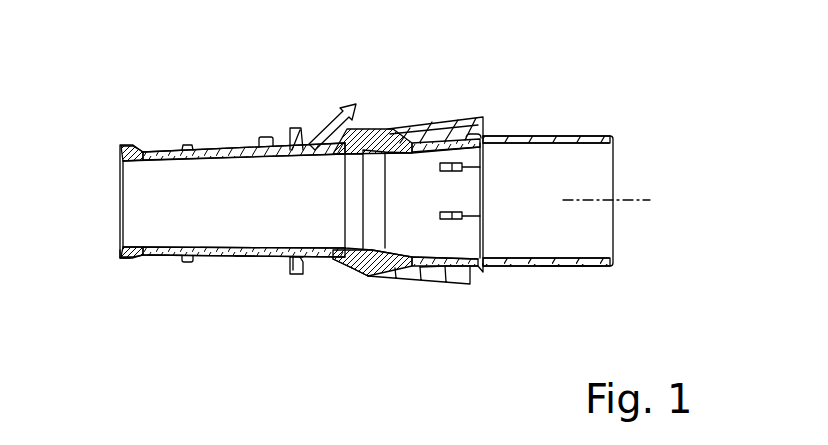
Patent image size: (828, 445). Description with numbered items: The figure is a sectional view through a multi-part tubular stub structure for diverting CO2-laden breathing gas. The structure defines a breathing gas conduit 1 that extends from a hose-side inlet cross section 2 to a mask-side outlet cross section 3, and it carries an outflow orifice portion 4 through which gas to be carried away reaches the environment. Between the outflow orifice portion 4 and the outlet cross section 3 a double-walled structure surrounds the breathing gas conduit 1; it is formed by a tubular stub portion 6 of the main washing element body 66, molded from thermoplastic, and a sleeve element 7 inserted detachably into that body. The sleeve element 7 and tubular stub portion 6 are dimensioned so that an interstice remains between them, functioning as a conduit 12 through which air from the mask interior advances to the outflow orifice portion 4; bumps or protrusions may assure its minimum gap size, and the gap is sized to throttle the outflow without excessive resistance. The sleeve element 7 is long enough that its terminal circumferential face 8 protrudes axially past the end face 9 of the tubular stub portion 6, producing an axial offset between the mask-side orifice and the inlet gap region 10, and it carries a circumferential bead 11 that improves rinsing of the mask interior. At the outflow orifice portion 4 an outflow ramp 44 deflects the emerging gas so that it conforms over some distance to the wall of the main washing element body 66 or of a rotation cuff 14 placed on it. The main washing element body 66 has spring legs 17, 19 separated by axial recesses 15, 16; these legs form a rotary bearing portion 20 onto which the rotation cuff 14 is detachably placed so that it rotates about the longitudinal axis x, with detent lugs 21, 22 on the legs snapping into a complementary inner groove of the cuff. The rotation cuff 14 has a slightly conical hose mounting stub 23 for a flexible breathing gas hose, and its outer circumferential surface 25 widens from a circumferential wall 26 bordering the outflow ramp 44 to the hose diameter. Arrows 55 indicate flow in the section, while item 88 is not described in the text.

The breathing gas conduit 1 is at (397, 210).
The inlet cross section 2 is at (545, 209).
The outlet cross section 3 is at (204, 212).
The outflow orifice portion 4 is at (300, 318).
The tubular stub portion 6 is at (203, 258).
The sleeve element 7 is at (232, 248).
The terminal circumferential face 8 is at (120, 205).
The end face 9 is at (182, 258).
The inlet gap region 10 is at (155, 262).
The circumferential bead 11 is at (120, 258).
The conduit 12 is at (268, 258).
The rotation cuff 14 is at (433, 284).
The axial recess 15 is at (473, 268).
The axial recess 16 is at (457, 130).
The spring leg 17 is at (463, 192).
The spring leg 19 is at (467, 244).
The rotary bearing portion 20 is at (417, 296).
The detent lug 21 is at (487, 273).
The detent lug 22 is at (462, 135).
The hose mounting stub 23 is at (573, 268).
The outer circumferential surface 25 is at (443, 284).
The circumferential wall 26 is at (370, 278).
The outflow ramp 44 is at (337, 268).
The tube interior 55 is at (242, 292).
The main washing element body 66 is at (350, 274).
The knob 88 is at (487, 138).
The longitudinal axis x is at (633, 197).